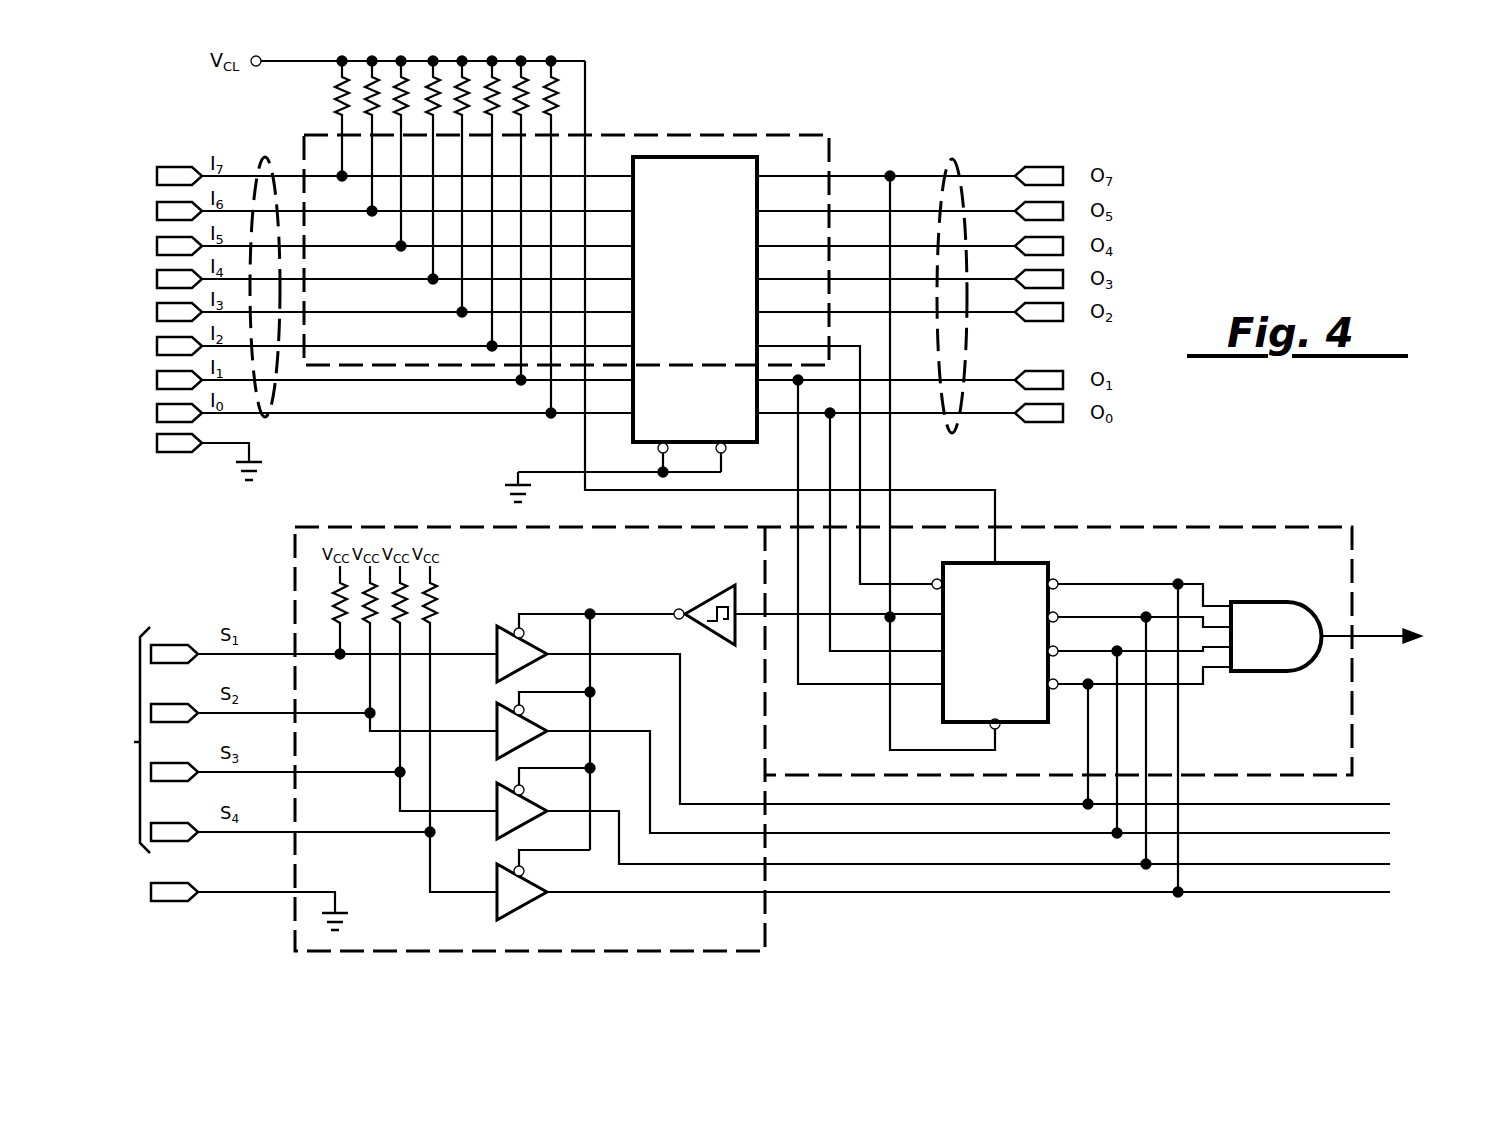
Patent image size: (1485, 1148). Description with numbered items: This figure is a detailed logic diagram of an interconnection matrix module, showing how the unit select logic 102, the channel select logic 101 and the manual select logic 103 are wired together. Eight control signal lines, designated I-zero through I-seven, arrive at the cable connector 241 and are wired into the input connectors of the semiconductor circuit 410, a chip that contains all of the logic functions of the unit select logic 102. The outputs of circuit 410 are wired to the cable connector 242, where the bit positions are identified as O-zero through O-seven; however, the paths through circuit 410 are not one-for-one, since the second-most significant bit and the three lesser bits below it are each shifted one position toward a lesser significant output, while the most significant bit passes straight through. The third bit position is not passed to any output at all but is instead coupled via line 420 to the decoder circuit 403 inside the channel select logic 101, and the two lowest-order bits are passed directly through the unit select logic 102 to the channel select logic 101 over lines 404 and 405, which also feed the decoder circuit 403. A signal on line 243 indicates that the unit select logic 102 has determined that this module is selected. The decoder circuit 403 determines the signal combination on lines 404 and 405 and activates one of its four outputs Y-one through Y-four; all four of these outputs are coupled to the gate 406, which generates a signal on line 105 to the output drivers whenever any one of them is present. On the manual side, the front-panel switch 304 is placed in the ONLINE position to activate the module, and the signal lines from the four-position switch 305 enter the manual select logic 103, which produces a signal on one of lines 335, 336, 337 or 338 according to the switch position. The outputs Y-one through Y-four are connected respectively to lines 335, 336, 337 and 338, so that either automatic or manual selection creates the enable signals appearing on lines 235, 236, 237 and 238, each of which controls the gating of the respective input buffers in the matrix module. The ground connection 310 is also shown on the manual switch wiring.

The channel select logic 101 is at (1222, 527).
The unit select logic 102 is at (713, 135).
The manual select logic 103 is at (768, 950).
The line 105 is at (1370, 636).
The cable connector 241 is at (262, 417).
The cable connector 242 is at (955, 433).
The line 243 is at (893, 449).
The line 420 is at (862, 472).
The semiconductor circuit 410 is at (631, 329).
The decoder circuit 403 is at (1000, 642).
The line 404 is at (828, 574).
The line 405 is at (797, 552).
The gate 406 is at (1276, 636).
The switch 305 is at (139, 740).
The switch 304 is at (143, 888).
The ground connection 310 is at (215, 891).
The line 335 is at (945, 896).
The line 336 is at (982, 866).
The line 337 is at (1006, 834).
The line 338 is at (1036, 805).
The enable signal line 235 is at (1372, 895).
The enable signal line 236 is at (1372, 865).
The enable signal line 237 is at (1372, 834).
The enable signal line 238 is at (1372, 805).